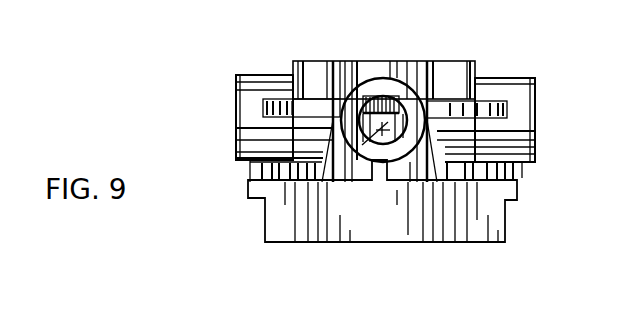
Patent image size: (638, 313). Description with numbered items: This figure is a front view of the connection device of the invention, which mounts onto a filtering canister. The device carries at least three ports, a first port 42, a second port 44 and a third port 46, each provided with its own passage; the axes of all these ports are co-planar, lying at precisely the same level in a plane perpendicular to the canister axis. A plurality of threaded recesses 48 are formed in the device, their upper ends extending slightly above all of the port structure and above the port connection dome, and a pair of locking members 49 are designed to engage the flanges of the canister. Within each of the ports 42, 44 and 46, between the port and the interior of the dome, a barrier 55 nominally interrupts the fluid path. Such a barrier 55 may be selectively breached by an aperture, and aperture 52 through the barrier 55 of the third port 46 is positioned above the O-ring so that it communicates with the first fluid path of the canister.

The first port 42 is at (238, 74).
The second port 44 is at (393, 80).
The third port 46 is at (523, 80).
The threaded recesses 48 is at (328, 62).
The locking members 49 is at (390, 228).
The aperture 52 is at (382, 78).
The barrier 55 is at (362, 145).